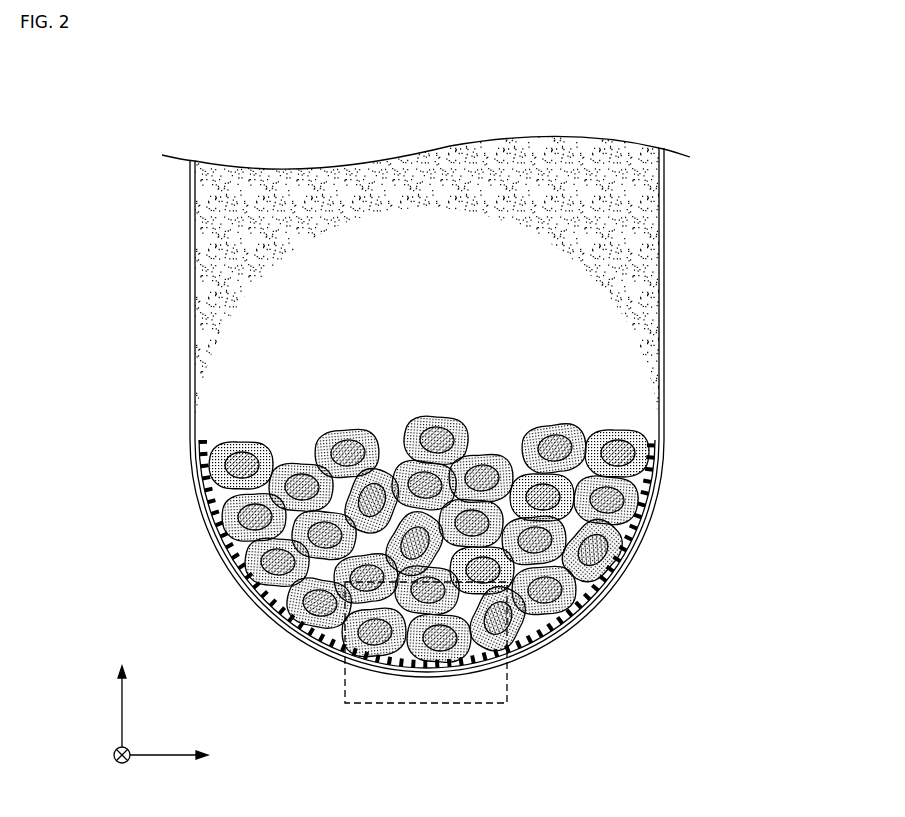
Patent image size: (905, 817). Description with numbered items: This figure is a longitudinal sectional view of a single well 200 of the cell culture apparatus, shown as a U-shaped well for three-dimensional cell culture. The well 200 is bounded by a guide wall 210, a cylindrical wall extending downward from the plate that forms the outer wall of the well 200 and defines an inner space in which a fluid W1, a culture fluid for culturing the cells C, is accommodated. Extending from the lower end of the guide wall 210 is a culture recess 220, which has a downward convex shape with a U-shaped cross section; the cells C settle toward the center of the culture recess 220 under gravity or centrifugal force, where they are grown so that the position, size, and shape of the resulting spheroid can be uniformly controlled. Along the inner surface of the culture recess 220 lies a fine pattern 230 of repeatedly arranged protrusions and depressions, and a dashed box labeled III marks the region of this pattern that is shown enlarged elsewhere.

The well 200 is at (166, 100).
The fluid W1 is at (430, 190).
The guide wall 210 is at (662, 216).
The culture recess 220 is at (658, 468).
The fine pattern 230 is at (600, 575).
The cells C is at (555, 432).
The section III region III is at (508, 685).